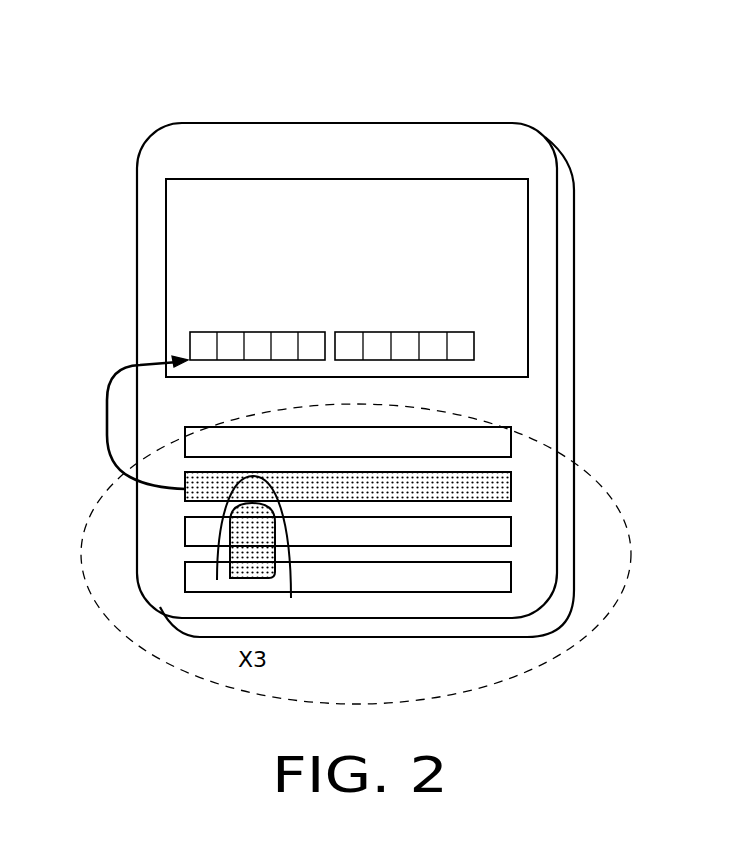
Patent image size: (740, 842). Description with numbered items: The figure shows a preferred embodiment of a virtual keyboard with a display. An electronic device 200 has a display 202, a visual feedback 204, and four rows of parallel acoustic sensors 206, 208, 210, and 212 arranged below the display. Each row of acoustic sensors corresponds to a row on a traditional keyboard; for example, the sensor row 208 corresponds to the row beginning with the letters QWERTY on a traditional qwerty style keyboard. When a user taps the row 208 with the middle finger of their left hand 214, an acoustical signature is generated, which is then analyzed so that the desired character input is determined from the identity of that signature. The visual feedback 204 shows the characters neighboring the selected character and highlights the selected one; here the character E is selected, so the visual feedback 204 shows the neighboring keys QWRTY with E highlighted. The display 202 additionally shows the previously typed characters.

The electronic device 200 is at (370, 122).
The display 202 is at (503, 252).
The visual feedback 204 is at (205, 332).
The acoustic sensor row 206 is at (185, 452).
The acoustic sensor row 208 is at (185, 497).
The acoustic sensor row 210 is at (185, 530).
The acoustic sensor row 212 is at (185, 578).
The middle finger of the left hand 214 is at (295, 580).